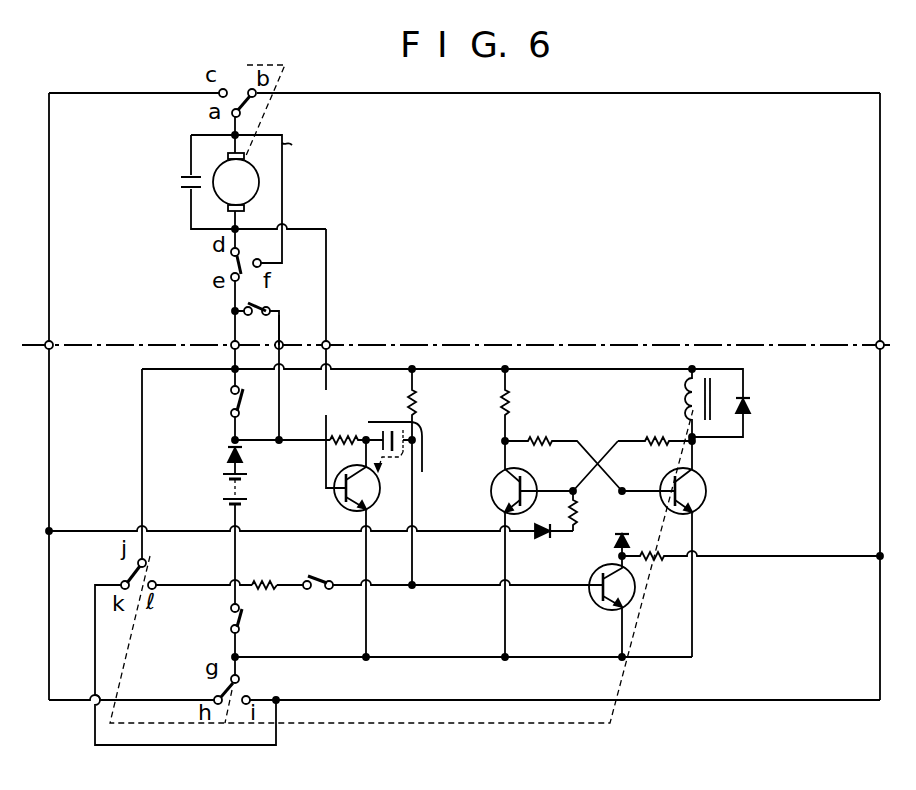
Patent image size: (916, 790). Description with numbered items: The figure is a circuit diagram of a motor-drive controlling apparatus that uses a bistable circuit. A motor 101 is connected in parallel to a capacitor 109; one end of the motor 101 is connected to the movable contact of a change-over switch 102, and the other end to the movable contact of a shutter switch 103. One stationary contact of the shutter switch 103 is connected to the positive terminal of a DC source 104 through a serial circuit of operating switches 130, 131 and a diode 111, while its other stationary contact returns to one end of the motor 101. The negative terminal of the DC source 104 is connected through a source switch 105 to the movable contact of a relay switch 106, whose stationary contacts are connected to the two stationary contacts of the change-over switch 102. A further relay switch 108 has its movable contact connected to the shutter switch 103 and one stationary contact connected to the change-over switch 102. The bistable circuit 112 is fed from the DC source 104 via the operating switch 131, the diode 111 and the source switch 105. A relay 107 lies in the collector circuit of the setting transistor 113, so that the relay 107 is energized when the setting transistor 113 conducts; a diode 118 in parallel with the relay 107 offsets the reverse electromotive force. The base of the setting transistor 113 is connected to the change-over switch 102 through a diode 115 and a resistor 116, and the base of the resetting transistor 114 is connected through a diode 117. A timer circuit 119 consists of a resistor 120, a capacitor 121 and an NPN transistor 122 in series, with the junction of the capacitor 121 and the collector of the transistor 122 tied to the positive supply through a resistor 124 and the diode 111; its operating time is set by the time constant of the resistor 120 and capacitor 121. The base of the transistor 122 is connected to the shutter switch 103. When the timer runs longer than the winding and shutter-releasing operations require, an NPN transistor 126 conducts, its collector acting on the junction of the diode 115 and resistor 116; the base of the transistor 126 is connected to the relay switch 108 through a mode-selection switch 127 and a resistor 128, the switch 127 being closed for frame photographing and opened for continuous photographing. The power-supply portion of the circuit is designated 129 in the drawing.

The motor 101 is at (259, 181).
The change-over switch 102 is at (232, 85).
The shutter switch 103 is at (236, 265).
The DC source 104 is at (221, 487).
The source switch 105 is at (230, 621).
The relay switch 106 is at (247, 692).
The relay 107 is at (688, 405).
The relay switch 108 is at (154, 578).
The capacitor 109 is at (181, 182).
The diode 111 is at (229, 455).
The bistable circuit 112 is at (585, 415).
The setting transistor 113 is at (707, 490).
The resetting transistor 114 is at (491, 492).
The diode 115 is at (618, 550).
The resistor 116 is at (659, 562).
The diode 117 is at (541, 542).
The diode 118 is at (751, 408).
The timer circuit 119 is at (355, 413).
The resistor 120 is at (420, 403).
The capacitor 121 is at (422, 450).
The NPN transistor 122 is at (342, 506).
The resistor 124 is at (338, 444).
The NPN transistor 126 is at (601, 601).
The mode-selection switch 127 is at (316, 591).
The resistor 128 is at (266, 591).
The power supply circuit 129 is at (298, 561).
The operating switch 130 is at (252, 313).
The operating switch 131 is at (237, 400).